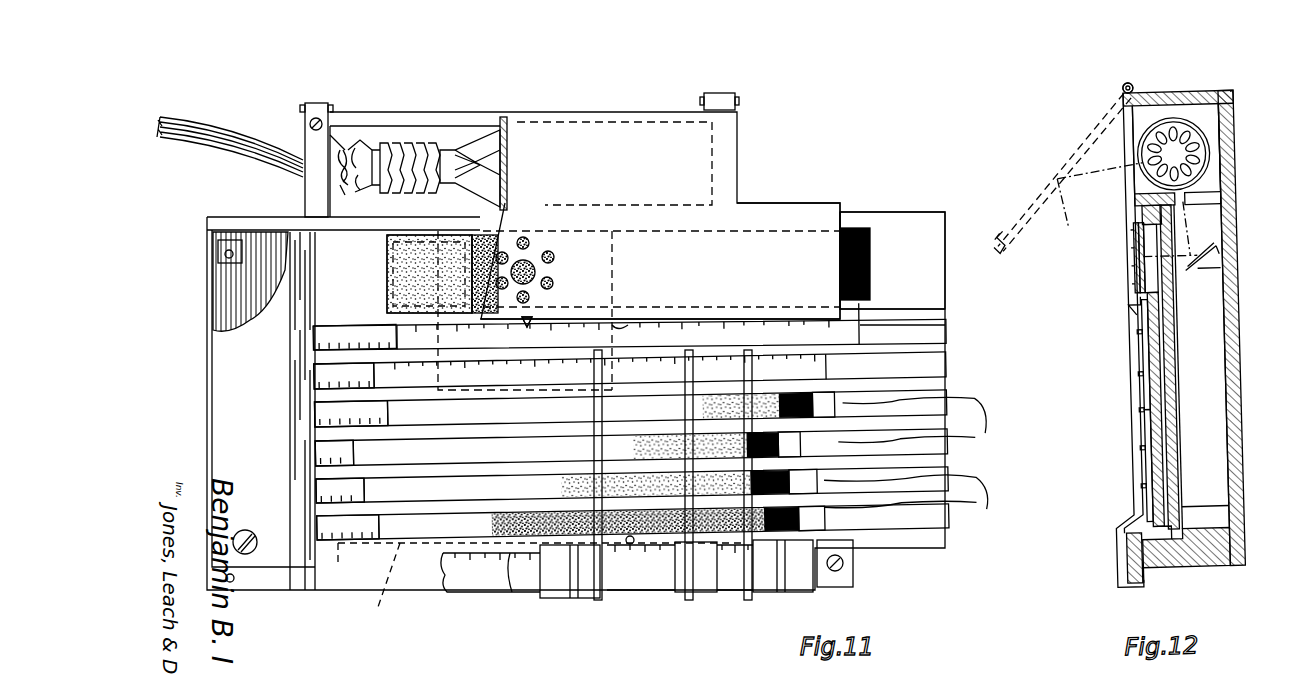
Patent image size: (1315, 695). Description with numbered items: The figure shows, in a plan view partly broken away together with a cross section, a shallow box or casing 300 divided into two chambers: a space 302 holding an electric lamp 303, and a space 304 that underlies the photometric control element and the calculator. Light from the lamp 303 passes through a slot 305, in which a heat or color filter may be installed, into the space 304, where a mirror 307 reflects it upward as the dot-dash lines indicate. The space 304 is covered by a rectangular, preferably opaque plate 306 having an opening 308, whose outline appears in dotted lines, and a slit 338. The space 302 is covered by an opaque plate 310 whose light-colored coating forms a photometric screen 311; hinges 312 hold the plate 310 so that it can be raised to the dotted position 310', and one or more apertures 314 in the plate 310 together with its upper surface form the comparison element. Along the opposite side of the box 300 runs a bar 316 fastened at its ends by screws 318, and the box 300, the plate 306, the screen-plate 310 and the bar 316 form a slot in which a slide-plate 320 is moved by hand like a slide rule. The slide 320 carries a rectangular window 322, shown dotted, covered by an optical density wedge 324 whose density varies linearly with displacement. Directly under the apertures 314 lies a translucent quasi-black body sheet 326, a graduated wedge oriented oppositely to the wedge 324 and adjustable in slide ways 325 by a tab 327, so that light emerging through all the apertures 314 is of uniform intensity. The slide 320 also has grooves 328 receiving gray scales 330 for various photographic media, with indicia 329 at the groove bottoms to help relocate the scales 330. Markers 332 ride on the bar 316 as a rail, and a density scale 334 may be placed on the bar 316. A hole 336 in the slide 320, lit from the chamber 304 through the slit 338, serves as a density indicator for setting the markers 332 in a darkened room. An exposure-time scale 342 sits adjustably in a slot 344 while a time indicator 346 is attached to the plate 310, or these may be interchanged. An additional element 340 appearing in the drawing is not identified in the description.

In FIG. 11, the casing 300 is at (215, 300).
In FIG. 12, the casing 300 is at (1226, 93).
In FIG. 11, the space 302 is at (410, 142).
In FIG. 12, the space 302 is at (1197, 119).
In FIG. 11, the electric lamp 303 is at (482, 130).
In FIG. 12, the electric lamp 303 is at (1170, 113).
In FIG. 11, the space 304 is at (218, 323).
In FIG. 12, the space 304 is at (1195, 330).
In FIG. 12, the slot 305 is at (1192, 205).
In FIG. 11, the rectangular plate 306 is at (225, 372).
In FIG. 12, the rectangular plate 306 is at (1155, 400).
In FIG. 12, the mirror 307 is at (1218, 257).
In FIG. 11, the opening 308 is at (607, 268).
In FIG. 12, the opening 308 is at (1168, 291).
In FIG. 11, the plate 310 is at (675, 242).
In FIG. 12, the plate 310 is at (1095, 336).
In FIG. 12, the dotted outline of raised plate 310' is at (1064, 172).
In FIG. 11, the photometric screen 311 is at (523, 238).
In FIG. 11, the hinges 312 is at (318, 103).
In FIG. 12, the hinges 312 is at (1130, 82).
In FIG. 11, the apertures 314 is at (550, 252).
In FIG. 12, the apertures 314 is at (1130, 235).
In FIG. 11, the bar 316 is at (458, 592).
In FIG. 12, the bar 316 is at (1133, 582).
In FIG. 11, the screws 318 is at (835, 571).
In FIG. 11, the slide-plate 320 is at (898, 222).
In FIG. 12, the slide-plate 320 is at (1170, 454).
In FIG. 11, the rectangular window 322 is at (400, 268).
In FIG. 12, the rectangular window 322 is at (1136, 220).
In FIG. 11, the optical density wedge 324 is at (403, 277).
In FIG. 12, the optical density wedge 324 is at (1138, 265).
In FIG. 11, the slide ways 325 is at (517, 265).
In FIG. 11, the quasi-black body sheet 326 is at (533, 272).
In FIG. 12, the quasi-black body sheet 326 is at (1135, 289).
In FIG. 11, the tab 327 is at (612, 325).
In FIG. 11, the grooves 328 is at (945, 500).
In FIG. 12, the grooves 328 is at (1138, 500).
In FIG. 11, the indicia 329 is at (315, 528).
In FIG. 11, the gray scales 330 is at (823, 517).
In FIG. 12, the gray scales 330 is at (1138, 433).
In FIG. 11, the markers 332 is at (598, 600).
In FIG. 12, the markers 332 is at (1105, 568).
In FIG. 11, the density scale 334 is at (515, 553).
In FIG. 11, the hole 336 is at (632, 544).
In FIG. 12, the hole 336 is at (1175, 568).
In FIG. 11, the slit 338 is at (540, 588).
In FIG. 12, the slit 338 is at (1173, 520).
In FIG. 11, the linear scale 340 is at (830, 360).
In FIG. 11, the exposure-time scale 342 is at (865, 312).
In FIG. 11, the slot 344 is at (870, 328).
In FIG. 11, the time indicator 346 is at (530, 316).
In FIG. 12, the time indicator 346 is at (987, 226).